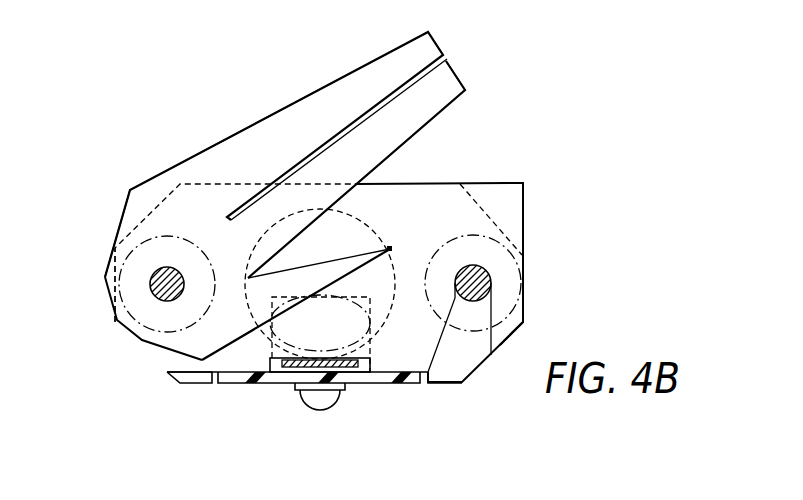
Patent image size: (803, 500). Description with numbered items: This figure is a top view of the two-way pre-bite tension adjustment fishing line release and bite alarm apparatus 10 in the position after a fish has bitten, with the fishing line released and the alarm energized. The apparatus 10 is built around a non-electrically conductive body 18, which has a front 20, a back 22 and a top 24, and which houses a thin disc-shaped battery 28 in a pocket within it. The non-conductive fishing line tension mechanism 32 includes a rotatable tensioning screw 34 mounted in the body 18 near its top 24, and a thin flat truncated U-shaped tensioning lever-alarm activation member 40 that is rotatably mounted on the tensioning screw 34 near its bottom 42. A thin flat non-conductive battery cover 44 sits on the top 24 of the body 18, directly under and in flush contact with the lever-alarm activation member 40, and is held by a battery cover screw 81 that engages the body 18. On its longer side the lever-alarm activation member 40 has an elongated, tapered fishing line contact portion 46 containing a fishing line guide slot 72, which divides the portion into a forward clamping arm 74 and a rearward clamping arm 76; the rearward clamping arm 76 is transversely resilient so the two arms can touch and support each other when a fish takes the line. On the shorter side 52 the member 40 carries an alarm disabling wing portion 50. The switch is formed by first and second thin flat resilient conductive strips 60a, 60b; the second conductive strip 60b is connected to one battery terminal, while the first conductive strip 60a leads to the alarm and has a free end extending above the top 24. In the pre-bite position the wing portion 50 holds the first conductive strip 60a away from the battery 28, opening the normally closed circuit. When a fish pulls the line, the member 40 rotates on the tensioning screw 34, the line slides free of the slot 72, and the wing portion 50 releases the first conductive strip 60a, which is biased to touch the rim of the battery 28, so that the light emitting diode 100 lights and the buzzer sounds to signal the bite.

The fishing line release and bite alarm apparatus 10 is at (138, 340).
The body 18 is at (523, 322).
The front 20 is at (328, 300).
The back 22 is at (443, 383).
The top 24 is at (472, 355).
The battery 28 is at (362, 218).
The fishing line tension mechanism 32 is at (107, 268).
The tensioning screw 34 is at (117, 322).
The tensioning lever-alarm activation member 40 is at (308, 60).
The bottom 42 is at (127, 213).
The battery cover 44 is at (523, 183).
The fishing line contact portion 46 is at (393, 62).
The alarm disabling wing portion 50 is at (340, 285).
The shorter side 52 is at (287, 292).
The first conductive strip 60a is at (273, 372).
The second conductive strip 60b is at (250, 310).
The fishing line guide slot 72 is at (447, 59).
The forward clamping arm 74 is at (433, 42).
The rearward clamping arm 76 is at (450, 82).
The battery cover screw 81 is at (515, 263).
The light emitting diode 100 is at (337, 407).